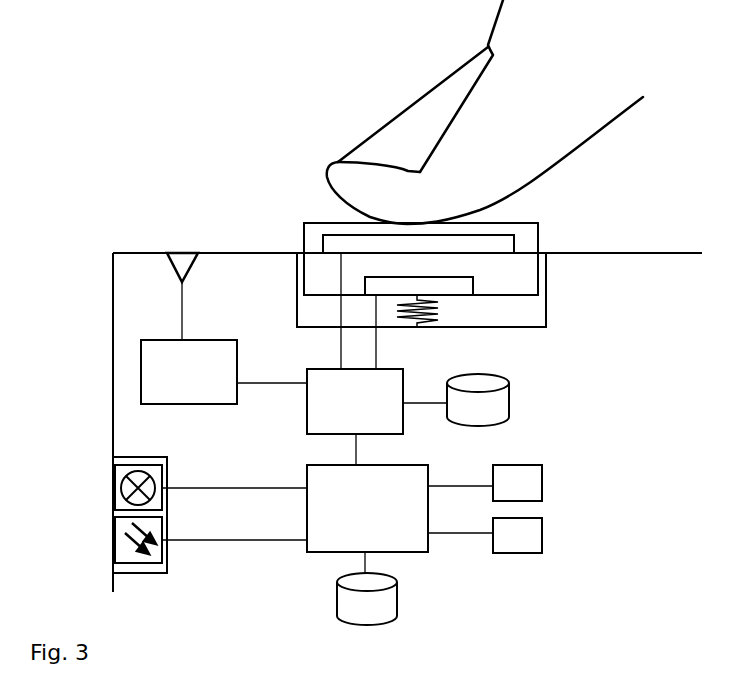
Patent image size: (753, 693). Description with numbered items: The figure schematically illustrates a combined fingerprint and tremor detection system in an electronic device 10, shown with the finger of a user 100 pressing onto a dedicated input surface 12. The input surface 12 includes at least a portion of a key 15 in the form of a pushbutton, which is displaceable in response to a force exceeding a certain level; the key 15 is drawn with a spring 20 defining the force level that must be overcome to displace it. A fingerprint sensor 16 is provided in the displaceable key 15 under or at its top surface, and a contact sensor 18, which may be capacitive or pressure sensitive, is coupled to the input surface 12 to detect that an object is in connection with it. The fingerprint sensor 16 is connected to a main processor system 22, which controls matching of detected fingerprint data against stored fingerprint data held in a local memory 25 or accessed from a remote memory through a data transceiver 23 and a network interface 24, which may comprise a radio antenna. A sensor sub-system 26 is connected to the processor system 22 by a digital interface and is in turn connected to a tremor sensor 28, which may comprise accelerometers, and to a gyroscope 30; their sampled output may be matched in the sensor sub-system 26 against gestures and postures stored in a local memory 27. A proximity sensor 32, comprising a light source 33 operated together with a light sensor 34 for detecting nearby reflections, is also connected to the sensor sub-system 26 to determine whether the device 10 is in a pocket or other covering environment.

The user 100 is at (503, 22).
The electronic device 10 is at (652, 293).
The dedicated input surface 12 is at (330, 221).
The key 15 is at (313, 284).
The fingerprint sensor 16 is at (510, 240).
The contact sensor 18 is at (463, 290).
The spring 20 is at (445, 314).
The processor system 22 is at (355, 401).
The data transceiver 23 is at (189, 372).
The network interface 24 is at (182, 252).
The local memory 25 is at (464, 419).
The sensor sub-system 26 is at (367, 508).
The local memory 27 is at (355, 618).
The tremor sensor 28 is at (504, 494).
The gyroscope 30 is at (504, 544).
The proximity sensor 32 is at (167, 517).
The light source 33 is at (143, 463).
The light sensor 34 is at (130, 563).